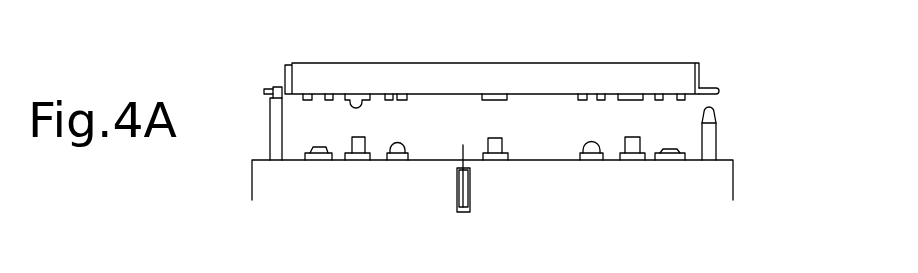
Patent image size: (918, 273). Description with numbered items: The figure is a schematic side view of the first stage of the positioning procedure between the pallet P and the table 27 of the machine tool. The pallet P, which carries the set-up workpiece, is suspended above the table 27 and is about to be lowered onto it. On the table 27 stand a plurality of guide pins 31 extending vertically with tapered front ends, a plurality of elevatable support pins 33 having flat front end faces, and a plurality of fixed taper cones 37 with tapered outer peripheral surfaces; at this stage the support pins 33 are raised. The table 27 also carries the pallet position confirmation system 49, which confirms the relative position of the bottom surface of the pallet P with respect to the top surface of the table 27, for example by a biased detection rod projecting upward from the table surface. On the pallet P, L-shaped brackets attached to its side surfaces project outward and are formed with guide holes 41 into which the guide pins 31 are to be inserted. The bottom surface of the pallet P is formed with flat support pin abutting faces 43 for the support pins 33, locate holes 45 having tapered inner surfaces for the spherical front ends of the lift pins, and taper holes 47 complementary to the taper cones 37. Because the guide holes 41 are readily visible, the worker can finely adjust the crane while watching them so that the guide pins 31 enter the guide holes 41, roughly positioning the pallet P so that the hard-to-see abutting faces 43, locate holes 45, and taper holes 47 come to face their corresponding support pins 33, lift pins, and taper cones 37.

The table 27 is at (727, 182).
The guide pin 31 is at (713, 138).
The support pin 33 is at (360, 145).
The taper cone 37 is at (318, 153).
The guide hole 41 is at (713, 83).
The support pin abutting face 43 is at (362, 95).
The locate hole 45 is at (397, 93).
The taper hole 47 is at (320, 93).
The pallet position confirmation system 49 is at (468, 197).
The pallet P is at (663, 72).